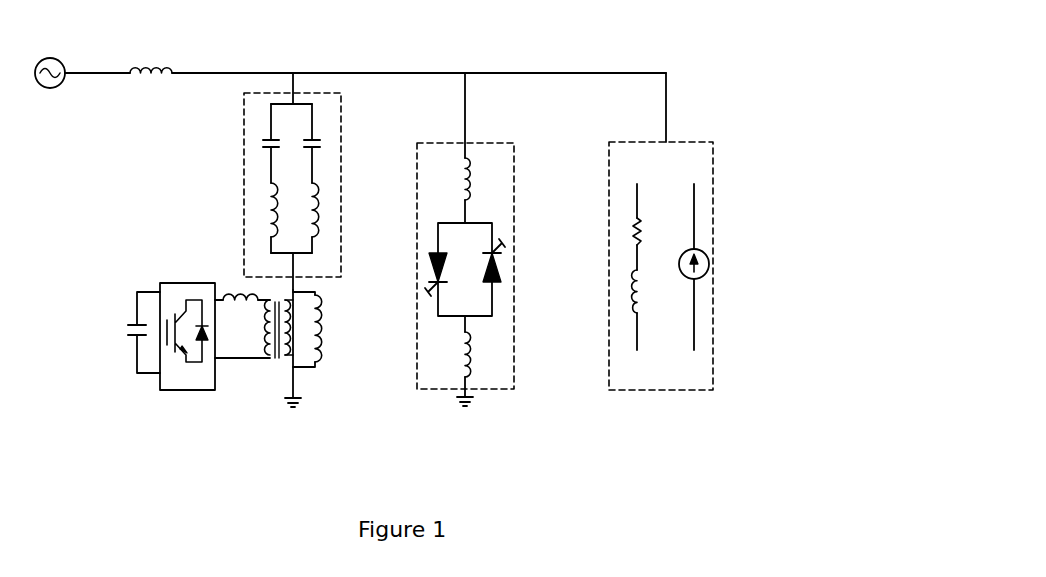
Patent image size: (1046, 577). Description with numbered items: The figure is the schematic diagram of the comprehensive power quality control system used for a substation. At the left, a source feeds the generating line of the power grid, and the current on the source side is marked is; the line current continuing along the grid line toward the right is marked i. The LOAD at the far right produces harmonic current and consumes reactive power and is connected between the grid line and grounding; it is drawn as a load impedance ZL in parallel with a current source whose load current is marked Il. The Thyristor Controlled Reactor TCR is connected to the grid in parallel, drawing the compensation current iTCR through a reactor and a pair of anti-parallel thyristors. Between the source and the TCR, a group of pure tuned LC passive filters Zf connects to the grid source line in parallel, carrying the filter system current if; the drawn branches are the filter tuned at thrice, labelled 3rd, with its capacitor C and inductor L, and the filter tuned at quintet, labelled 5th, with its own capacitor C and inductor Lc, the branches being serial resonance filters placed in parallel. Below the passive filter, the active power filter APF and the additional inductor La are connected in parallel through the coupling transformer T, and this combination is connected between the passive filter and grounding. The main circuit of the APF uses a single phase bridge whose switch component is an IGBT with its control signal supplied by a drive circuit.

The current on source side is is at (122, 57).
The line current i is at (490, 62).
The filter system current if is at (230, 127).
The Thyristor Controlled Reactor compensation current iTCR is at (449, 120).
The pure tuned passive filter Zf is at (250, 181).
The 3rd harmonic filter branch 3rd is at (262, 178).
The 5th harmonic filter branch 5th is at (318, 178).
The filter capacitor C is at (262, 140).
The filter inductor L is at (261, 210).
The filter inductor Lc is at (320, 210).
The additional inductor La is at (323, 329).
The coupling transformer T is at (254, 340).
The active power filter APF is at (171, 351).
The Thyristor Controlled Reactor TCR is at (465, 252).
The Load LOAD is at (661, 252).
The load impedance ZL is at (625, 267).
The load current Il is at (686, 267).